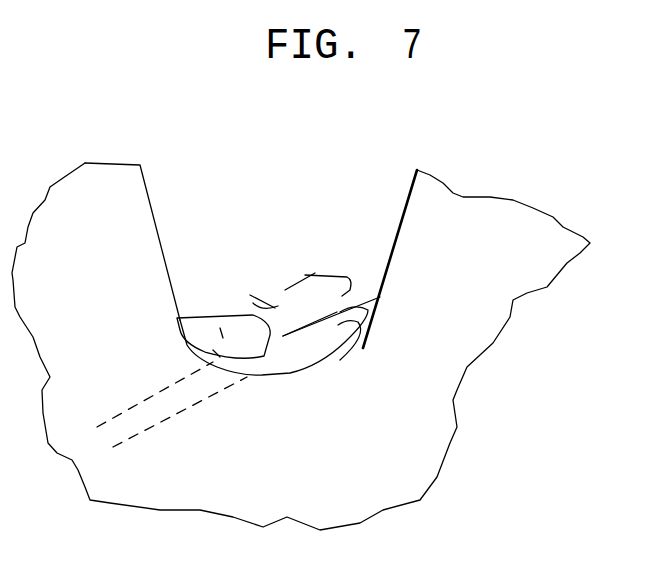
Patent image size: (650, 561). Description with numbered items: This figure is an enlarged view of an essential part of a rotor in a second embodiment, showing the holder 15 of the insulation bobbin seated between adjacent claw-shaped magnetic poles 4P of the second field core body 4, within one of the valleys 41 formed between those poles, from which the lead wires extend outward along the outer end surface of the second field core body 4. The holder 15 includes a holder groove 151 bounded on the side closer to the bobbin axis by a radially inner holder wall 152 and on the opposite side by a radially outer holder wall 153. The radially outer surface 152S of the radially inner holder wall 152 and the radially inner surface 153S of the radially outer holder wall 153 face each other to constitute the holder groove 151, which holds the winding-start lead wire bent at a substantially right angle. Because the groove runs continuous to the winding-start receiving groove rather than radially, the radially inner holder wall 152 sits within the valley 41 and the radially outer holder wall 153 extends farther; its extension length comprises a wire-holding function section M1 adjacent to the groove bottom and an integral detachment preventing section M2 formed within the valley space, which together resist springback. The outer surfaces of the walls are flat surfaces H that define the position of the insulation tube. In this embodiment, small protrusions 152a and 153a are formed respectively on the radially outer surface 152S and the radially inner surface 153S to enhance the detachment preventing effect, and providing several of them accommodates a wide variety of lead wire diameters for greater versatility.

The second field core body 4 is at (530, 217).
The claw-shaped magnetic poles 4P is at (95, 182).
The valleys 41 is at (175, 190).
The holder 15 is at (283, 303).
The holder groove 151 is at (380, 297).
The radially inner holder wall 152 is at (338, 352).
The small protrusion 152a is at (313, 335).
The radially outer surface 152S is at (372, 302).
The radially outer holder wall 153 is at (267, 304).
The small protrusion 153a is at (283, 333).
The radially inner surface 153S is at (366, 300).
The wire-holding function section M1 is at (253, 303).
The detachment preventing section M2 is at (300, 285).
The flat surfaces H is at (270, 273).